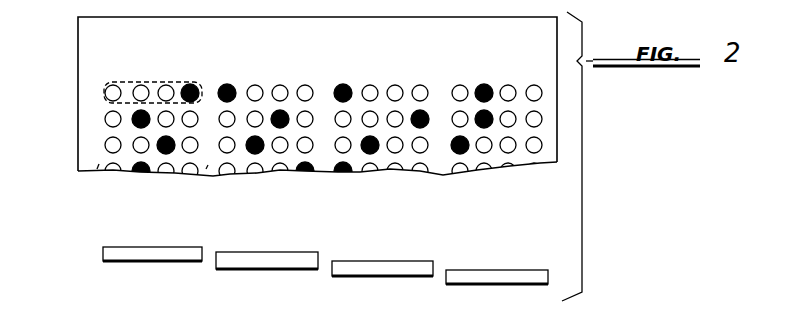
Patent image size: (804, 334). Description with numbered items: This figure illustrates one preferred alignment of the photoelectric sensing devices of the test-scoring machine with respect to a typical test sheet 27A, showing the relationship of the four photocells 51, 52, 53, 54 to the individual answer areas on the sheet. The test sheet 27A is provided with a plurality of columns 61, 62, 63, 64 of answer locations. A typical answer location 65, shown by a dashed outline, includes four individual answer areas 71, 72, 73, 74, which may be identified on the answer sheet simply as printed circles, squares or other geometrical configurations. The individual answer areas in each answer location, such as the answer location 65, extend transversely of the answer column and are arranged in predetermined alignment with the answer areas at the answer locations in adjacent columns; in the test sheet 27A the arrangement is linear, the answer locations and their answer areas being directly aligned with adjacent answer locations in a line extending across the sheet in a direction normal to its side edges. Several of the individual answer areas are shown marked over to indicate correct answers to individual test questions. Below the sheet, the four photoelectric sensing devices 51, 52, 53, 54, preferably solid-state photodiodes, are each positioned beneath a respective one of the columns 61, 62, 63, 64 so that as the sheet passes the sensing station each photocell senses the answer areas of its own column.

The test sheet 27A is at (93, 58).
The answer location 65 is at (112, 80).
The column of answer locations 61 is at (138, 102).
The column of answer locations 62 is at (265, 73).
The column of answer locations 63 is at (431, 77).
The column of answer locations 64 is at (531, 81).
The answer area 71 is at (104, 93).
The answer area 72 is at (142, 87).
The answer area 73 is at (167, 96).
The answer area 74 is at (193, 83).
The photoelectric sensing device 51 is at (153, 262).
The photoelectric sensing device 52 is at (278, 270).
The photoelectric sensing device 53 is at (380, 277).
The photoelectric sensing device 54 is at (503, 285).